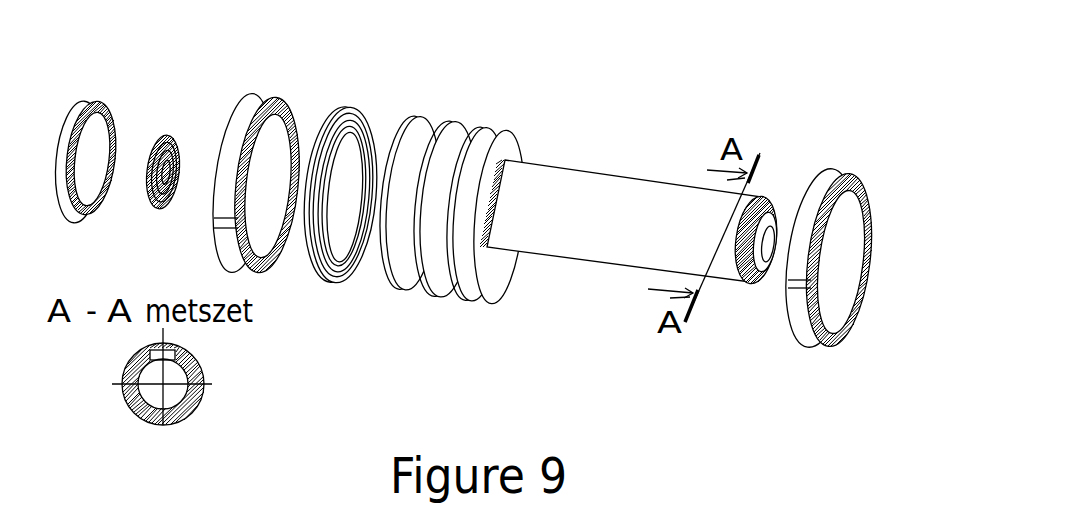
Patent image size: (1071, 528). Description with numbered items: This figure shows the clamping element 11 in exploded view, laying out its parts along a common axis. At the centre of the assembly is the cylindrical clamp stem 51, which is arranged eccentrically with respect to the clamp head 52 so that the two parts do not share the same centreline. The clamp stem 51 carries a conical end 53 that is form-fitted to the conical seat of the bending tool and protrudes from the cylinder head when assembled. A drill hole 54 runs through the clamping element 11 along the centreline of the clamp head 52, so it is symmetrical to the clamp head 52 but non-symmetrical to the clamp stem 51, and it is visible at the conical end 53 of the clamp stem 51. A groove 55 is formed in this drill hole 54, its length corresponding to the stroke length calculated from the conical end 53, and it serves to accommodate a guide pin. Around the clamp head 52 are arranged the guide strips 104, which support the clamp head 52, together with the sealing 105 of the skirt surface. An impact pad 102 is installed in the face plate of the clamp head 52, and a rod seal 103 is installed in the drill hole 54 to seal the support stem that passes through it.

The clamping element 11 is at (437, 237).
The clamp stem 51 is at (598, 170).
The clamp head 52 is at (508, 143).
The conical end 53 is at (767, 207).
The drill hole 54 is at (762, 228).
The groove 55 is at (153, 360).
The impact pad 102 is at (75, 103).
The rod seal 103 is at (151, 212).
The guide strips 104 is at (247, 97).
The sealing 105 is at (353, 107).